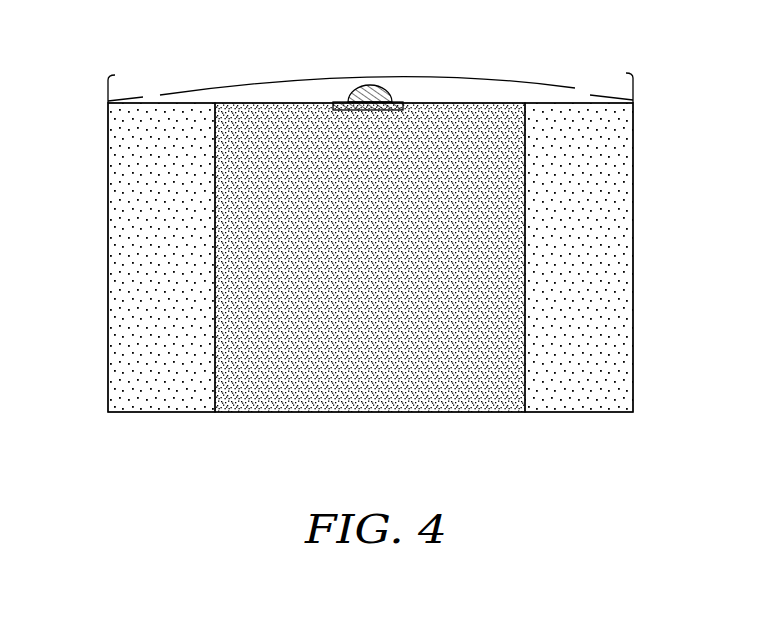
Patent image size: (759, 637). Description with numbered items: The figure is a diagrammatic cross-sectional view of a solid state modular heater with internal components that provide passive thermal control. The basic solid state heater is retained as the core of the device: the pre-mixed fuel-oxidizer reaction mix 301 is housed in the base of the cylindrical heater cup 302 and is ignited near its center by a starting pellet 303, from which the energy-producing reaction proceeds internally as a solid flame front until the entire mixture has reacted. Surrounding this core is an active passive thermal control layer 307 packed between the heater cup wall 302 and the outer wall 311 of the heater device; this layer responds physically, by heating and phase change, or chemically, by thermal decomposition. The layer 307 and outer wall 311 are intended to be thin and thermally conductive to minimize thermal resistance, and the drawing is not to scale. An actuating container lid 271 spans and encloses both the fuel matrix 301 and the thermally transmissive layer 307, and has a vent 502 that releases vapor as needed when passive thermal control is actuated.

The actuating container lid 271 is at (220, 85).
The starting pellet 303 is at (376, 87).
The vent 502 is at (586, 93).
The active passive thermal control layer 307 is at (597, 178).
The pre-mixed fuel-oxidizer reaction mix 301 is at (490, 258).
The outer wall 311 is at (633, 338).
The heater cup 302 is at (215, 272).